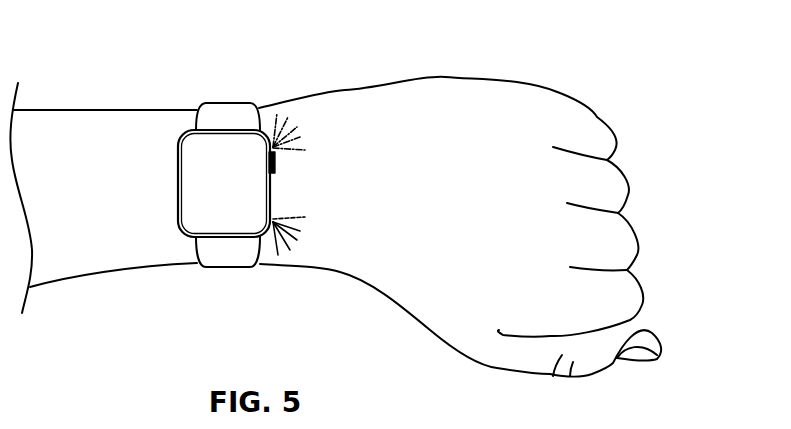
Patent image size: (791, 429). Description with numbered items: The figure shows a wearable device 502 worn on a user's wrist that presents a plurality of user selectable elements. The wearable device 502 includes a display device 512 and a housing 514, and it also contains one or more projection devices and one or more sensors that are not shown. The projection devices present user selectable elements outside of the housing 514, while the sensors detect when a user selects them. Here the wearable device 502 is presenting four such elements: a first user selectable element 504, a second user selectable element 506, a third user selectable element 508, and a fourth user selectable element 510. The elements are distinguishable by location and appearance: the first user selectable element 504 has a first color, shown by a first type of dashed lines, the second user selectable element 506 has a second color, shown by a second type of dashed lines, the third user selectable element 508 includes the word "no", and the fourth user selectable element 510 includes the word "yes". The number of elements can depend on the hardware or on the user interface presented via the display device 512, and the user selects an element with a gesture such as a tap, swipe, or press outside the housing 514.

The wearable device 502 is at (237, 130).
The first user selectable element 504 is at (277, 108).
The second user selectable element 506 is at (277, 265).
The third user selectable element 508 is at (172, 264).
The fourth user selectable element 510 is at (172, 110).
The display device 512 is at (178, 170).
The housing 514 is at (270, 192).